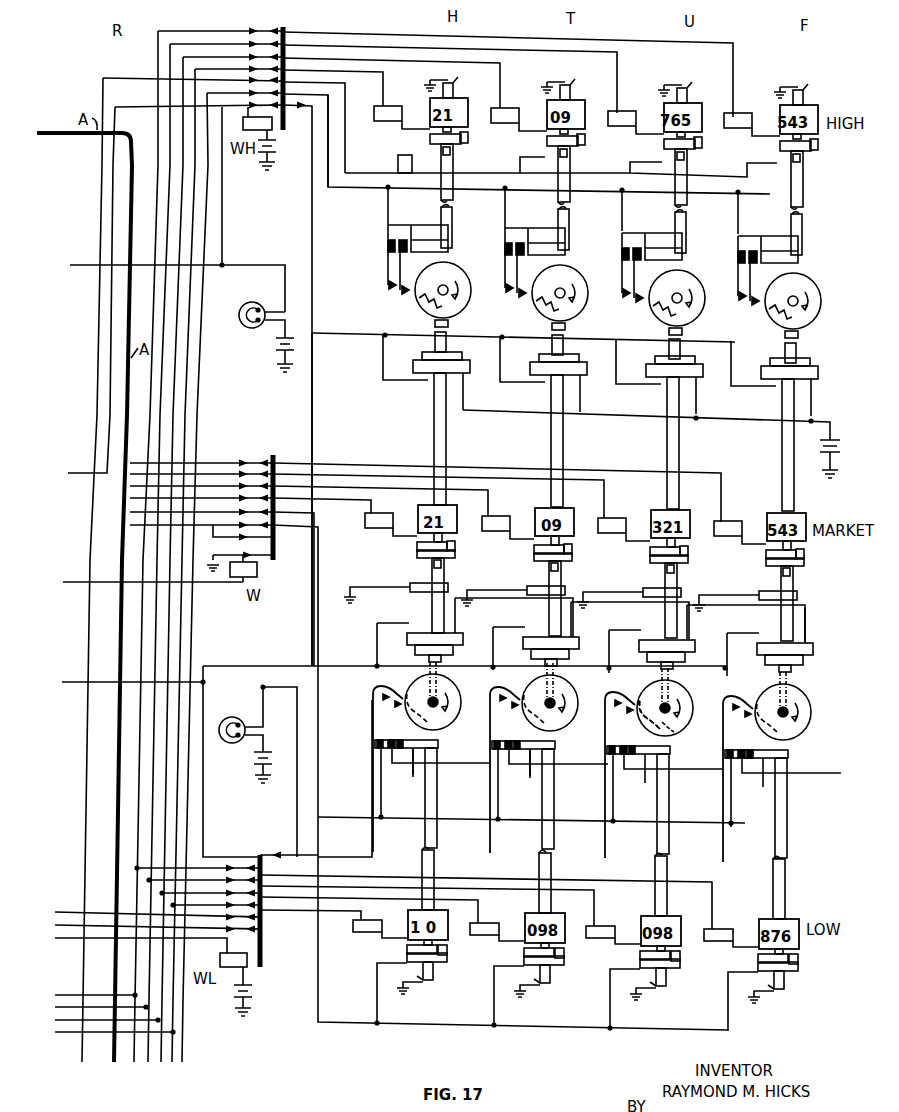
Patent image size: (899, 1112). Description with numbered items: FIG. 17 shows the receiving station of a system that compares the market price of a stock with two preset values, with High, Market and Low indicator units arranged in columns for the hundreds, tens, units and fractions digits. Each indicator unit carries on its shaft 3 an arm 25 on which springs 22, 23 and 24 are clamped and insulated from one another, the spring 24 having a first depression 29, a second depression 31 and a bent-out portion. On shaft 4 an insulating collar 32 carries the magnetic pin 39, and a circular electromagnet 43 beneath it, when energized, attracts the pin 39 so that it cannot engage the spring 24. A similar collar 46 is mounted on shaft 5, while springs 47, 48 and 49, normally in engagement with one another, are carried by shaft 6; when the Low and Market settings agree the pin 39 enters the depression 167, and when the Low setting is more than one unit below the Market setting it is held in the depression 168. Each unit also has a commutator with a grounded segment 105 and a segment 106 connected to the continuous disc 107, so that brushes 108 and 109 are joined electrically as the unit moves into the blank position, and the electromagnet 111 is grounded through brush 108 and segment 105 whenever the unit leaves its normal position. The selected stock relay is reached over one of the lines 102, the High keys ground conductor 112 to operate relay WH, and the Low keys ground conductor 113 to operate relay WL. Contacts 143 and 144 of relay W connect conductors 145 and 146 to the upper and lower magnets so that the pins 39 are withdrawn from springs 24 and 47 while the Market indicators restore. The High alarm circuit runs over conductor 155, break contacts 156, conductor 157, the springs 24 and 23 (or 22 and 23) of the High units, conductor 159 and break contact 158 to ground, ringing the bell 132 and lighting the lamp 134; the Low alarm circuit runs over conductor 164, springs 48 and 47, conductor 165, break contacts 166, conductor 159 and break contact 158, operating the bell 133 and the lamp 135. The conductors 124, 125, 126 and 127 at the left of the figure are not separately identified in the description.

The shaft 3 is at (455, 212).
The shaft 4 is at (446, 340).
The shaft 5 is at (427, 668).
The shaft 6 is at (436, 846).
The spring 22 is at (388, 262).
The spring 23 is at (388, 285).
The spring 24 is at (416, 279).
The arm 25 is at (414, 755).
The first depression 29 is at (435, 322).
The second depression 31 is at (660, 316).
The insulating collar 32 is at (468, 312).
The pin 39 is at (425, 300).
The circular electromagnet 43 is at (426, 385).
The collar 46 is at (452, 694).
The spring 47 is at (372, 708).
The spring 48 is at (384, 718).
The spring 49 is at (395, 722).
The line 102 is at (202, 587).
The grounded segment 105 is at (431, 137).
The segment 106 is at (462, 134).
The continuous disc 107 is at (456, 152).
The brush 108 is at (411, 117).
The brush 109 is at (400, 168).
The electromagnet 111 is at (382, 115).
The conductor 112 is at (80, 472).
The conductor 113 is at (70, 944).
The conductor 124 is at (195, 167).
The conductor 125 is at (182, 180).
The conductor 126 is at (168, 192).
The conductor 127 is at (157, 207).
The bell 132 is at (131, 76).
The bell 133 is at (199, 410).
The alarm lamp 134 is at (248, 328).
The alarm lamp 135 is at (232, 743).
The contacts 143 is at (232, 503).
The contacts 144 is at (240, 545).
The conductor 145 is at (285, 378).
The conductor 146 is at (320, 648).
The conductor 155 is at (78, 264).
The break contacts 156 is at (300, 116).
The conductor 157 is at (330, 188).
The break contact 158 is at (283, 575).
The conductor 159 is at (316, 412).
The conductor 164 is at (71, 680).
The conductor 165 is at (372, 850).
The break contacts 166 is at (284, 853).
The spring depression 167 is at (532, 723).
The depression 168 is at (666, 740).